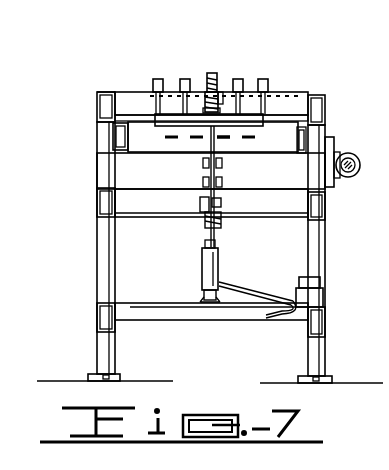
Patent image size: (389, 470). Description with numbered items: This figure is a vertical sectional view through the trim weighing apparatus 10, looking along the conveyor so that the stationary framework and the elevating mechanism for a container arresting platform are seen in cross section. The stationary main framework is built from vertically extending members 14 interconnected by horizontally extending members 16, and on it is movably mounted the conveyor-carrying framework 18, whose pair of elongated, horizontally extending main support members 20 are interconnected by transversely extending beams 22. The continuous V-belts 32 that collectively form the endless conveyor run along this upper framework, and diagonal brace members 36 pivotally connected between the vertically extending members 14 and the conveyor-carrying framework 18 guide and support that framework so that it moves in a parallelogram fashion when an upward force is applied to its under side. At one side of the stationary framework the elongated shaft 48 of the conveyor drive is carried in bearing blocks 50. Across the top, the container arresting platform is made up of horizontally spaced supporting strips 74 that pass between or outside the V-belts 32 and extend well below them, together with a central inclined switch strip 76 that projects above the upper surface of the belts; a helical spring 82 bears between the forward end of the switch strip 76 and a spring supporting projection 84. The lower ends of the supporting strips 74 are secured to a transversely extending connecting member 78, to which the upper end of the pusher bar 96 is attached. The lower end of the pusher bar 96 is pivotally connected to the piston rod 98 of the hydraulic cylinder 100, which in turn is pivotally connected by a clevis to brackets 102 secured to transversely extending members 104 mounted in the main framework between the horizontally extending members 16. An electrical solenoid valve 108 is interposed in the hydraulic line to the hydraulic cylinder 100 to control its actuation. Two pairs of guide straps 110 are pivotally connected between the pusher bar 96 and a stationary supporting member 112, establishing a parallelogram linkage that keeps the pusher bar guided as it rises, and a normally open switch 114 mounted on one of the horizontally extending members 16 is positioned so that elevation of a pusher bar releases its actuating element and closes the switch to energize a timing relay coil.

The trim weighing apparatus 10 is at (92, 259).
The vertically extending members 14 is at (97, 247).
The horizontally extending members 16 is at (97, 202).
The conveyor-carrying framework 18 is at (93, 84).
The main support members 20 is at (97, 104).
The transversely extending beams 22 is at (284, 100).
The V-belts 32 is at (264, 143).
The diagonal brace members 36 is at (128, 143).
The elongated shaft 48 is at (348, 153).
The bearing blocks 50 is at (338, 178).
The supporting strips 74 is at (158, 78).
The switch strip 76 is at (212, 72).
The connecting member 78 is at (165, 120).
The helical spring 82 is at (219, 92).
The spring supporting projection 84 is at (206, 96).
The pusher bar 96 is at (214, 143).
The piston rod 98 is at (218, 207).
The hydraulic cylinder 100 is at (203, 266).
The brackets 102 is at (204, 298).
The transversely extending members 104 is at (183, 318).
The electrical solenoid valve 108 is at (325, 297).
The guide straps 110 is at (204, 162).
The stationary supporting member 112 is at (247, 185).
The normally open switch 114 is at (202, 208).